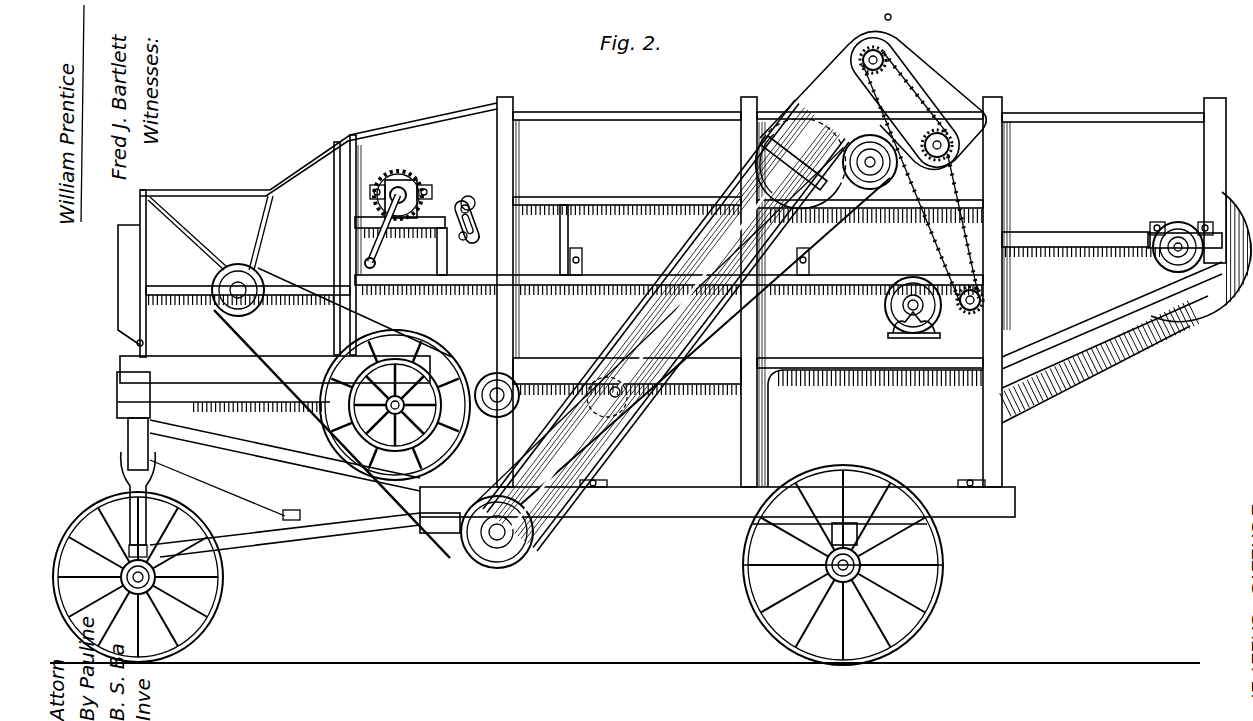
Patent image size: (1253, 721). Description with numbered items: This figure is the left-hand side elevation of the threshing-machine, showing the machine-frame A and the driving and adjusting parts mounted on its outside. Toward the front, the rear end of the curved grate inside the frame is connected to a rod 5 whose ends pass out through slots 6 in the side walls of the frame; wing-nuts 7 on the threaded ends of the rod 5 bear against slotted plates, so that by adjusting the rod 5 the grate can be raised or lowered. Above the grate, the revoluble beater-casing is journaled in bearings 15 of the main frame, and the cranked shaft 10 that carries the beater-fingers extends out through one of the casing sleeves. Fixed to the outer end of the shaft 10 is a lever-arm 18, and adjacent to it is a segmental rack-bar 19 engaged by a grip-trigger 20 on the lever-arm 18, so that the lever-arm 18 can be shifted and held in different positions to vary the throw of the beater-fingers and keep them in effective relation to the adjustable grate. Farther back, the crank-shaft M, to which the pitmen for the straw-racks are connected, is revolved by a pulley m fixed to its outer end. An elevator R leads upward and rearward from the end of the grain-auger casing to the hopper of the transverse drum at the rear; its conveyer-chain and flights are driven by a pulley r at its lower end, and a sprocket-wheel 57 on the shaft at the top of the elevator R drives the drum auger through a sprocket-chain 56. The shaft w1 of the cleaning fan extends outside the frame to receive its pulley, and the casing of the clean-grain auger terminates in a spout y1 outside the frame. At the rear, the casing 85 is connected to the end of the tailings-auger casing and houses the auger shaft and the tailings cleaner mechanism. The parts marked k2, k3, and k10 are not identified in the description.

The machine-frame A is at (675, 248).
The elevator R is at (873, 92).
The crank-shaft M is at (362, 378).
The pulley m is at (333, 385).
The belt k10 is at (446, 345).
The pulley r is at (517, 548).
The chain casing k3 is at (943, 100).
The sprocket wheel k2 is at (936, 135).
The sprocket-wheel 57 is at (880, 55).
The sprocket-chain 56 is at (910, 88).
The spout y1 is at (938, 336).
The fan shaft w1 is at (812, 262).
The casing 85 is at (1102, 355).
The bearing 15 is at (420, 183).
The cranked shaft 10 is at (400, 190).
The grip-trigger 20 is at (380, 222).
The lever-arm 18 is at (385, 248).
The segmental rack-bar 19 is at (428, 202).
The rod 5 is at (473, 207).
The wing-nut 7 is at (483, 216).
The slot 6 is at (465, 241).